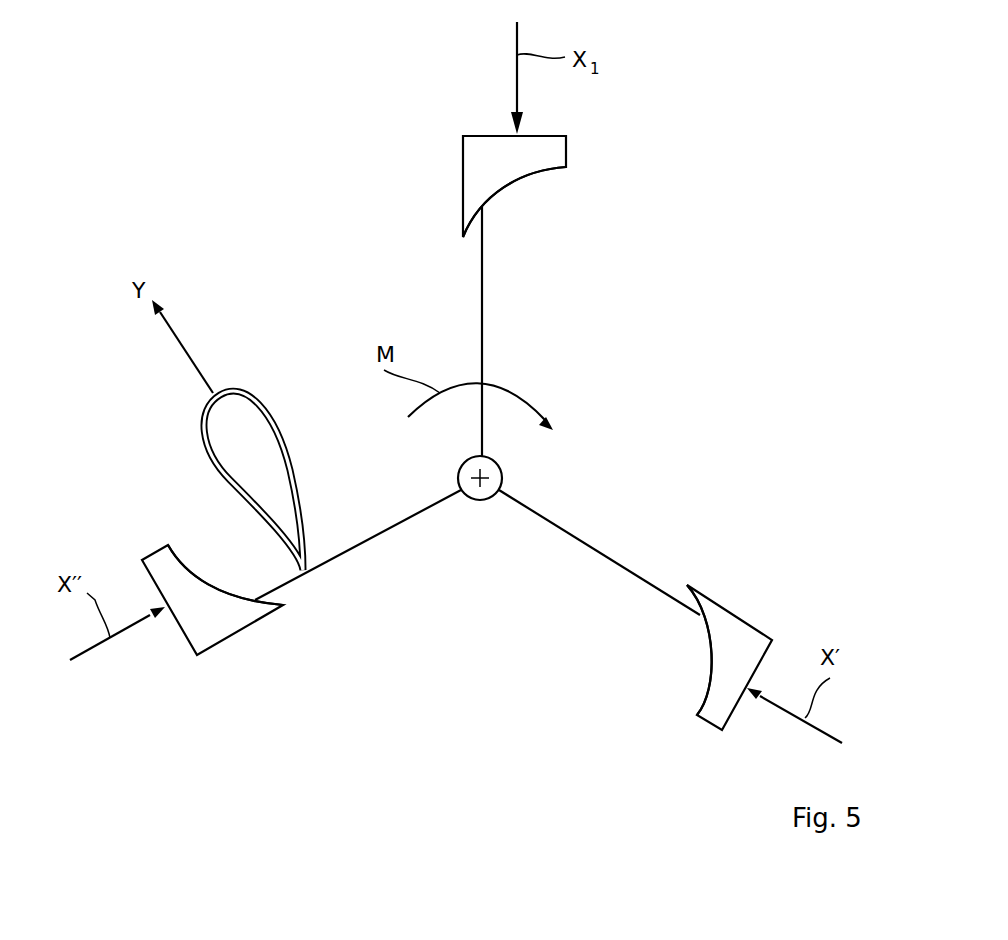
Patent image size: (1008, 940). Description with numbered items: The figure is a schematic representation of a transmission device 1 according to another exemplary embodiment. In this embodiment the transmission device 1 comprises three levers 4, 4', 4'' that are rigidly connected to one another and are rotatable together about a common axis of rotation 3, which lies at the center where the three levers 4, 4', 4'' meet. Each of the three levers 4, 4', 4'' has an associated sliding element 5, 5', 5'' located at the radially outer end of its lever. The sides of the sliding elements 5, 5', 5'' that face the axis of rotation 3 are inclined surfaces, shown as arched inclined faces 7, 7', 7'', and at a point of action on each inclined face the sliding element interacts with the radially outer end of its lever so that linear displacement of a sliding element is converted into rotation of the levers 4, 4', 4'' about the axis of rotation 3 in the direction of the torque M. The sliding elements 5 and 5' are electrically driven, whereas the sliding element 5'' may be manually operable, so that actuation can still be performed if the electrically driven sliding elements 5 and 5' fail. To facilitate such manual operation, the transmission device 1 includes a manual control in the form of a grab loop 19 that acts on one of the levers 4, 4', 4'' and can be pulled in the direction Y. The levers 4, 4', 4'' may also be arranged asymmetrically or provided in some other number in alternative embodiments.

The transmission device 1 is at (630, 258).
The axis of rotation 3 is at (497, 466).
The lever 4 is at (516, 331).
The lever 4' is at (599, 551).
The lever 4'' is at (358, 530).
The sliding element 5 is at (538, 186).
The sliding element 5' is at (732, 650).
The sliding element 5'' is at (212, 617).
The curved lens surface 7 is at (514, 202).
The curved lens surface 7' is at (682, 650).
The curved lens surface 7'' is at (225, 569).
The grab loop 19 is at (245, 395).